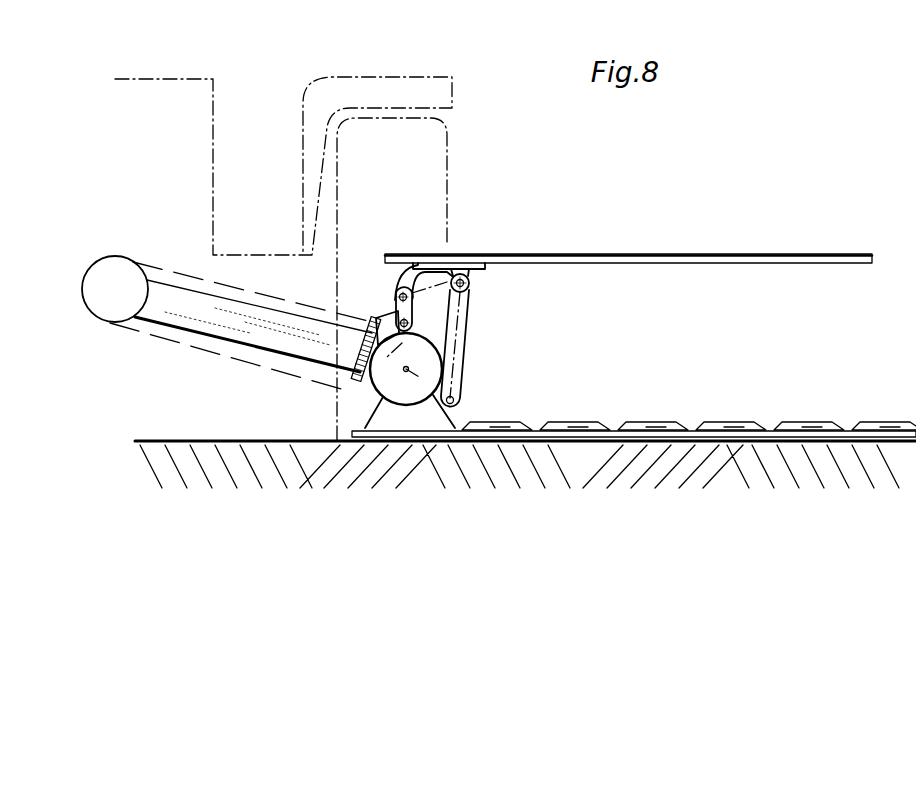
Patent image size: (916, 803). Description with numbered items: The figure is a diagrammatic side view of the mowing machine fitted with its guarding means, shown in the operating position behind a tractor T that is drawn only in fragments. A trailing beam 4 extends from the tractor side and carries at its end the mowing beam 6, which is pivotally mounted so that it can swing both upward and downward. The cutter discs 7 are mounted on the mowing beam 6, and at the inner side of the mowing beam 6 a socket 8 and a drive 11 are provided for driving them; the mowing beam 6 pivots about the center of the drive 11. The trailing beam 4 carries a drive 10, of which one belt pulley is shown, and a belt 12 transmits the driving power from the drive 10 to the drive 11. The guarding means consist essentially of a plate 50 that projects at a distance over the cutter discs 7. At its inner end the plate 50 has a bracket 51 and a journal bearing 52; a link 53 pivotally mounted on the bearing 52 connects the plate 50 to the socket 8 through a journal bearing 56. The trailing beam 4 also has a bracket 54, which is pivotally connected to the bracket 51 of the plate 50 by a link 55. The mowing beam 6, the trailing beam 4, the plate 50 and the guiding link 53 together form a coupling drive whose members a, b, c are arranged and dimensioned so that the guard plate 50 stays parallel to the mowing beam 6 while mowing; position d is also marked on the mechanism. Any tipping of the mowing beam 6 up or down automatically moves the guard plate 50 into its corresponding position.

The tractor T is at (213, 79).
The trailing beam 4 is at (250, 333).
The mowing beam 6 is at (613, 435).
The cutter discs 7 is at (592, 427).
The socket 8 is at (428, 418).
The drive 10 is at (102, 308).
The drive 11 is at (430, 368).
The belt 12 is at (187, 340).
The plate 50 is at (618, 257).
The bracket 51 is at (416, 268).
The journal bearing 52 is at (477, 277).
The link 53 is at (465, 352).
The bracket 54 is at (377, 317).
The link 55 is at (383, 280).
The journal bearing 56 is at (446, 430).
The coupling drive member a is at (398, 362).
The coupling drive member b is at (420, 380).
The coupling drive member c is at (460, 313).
The position d is at (440, 282).